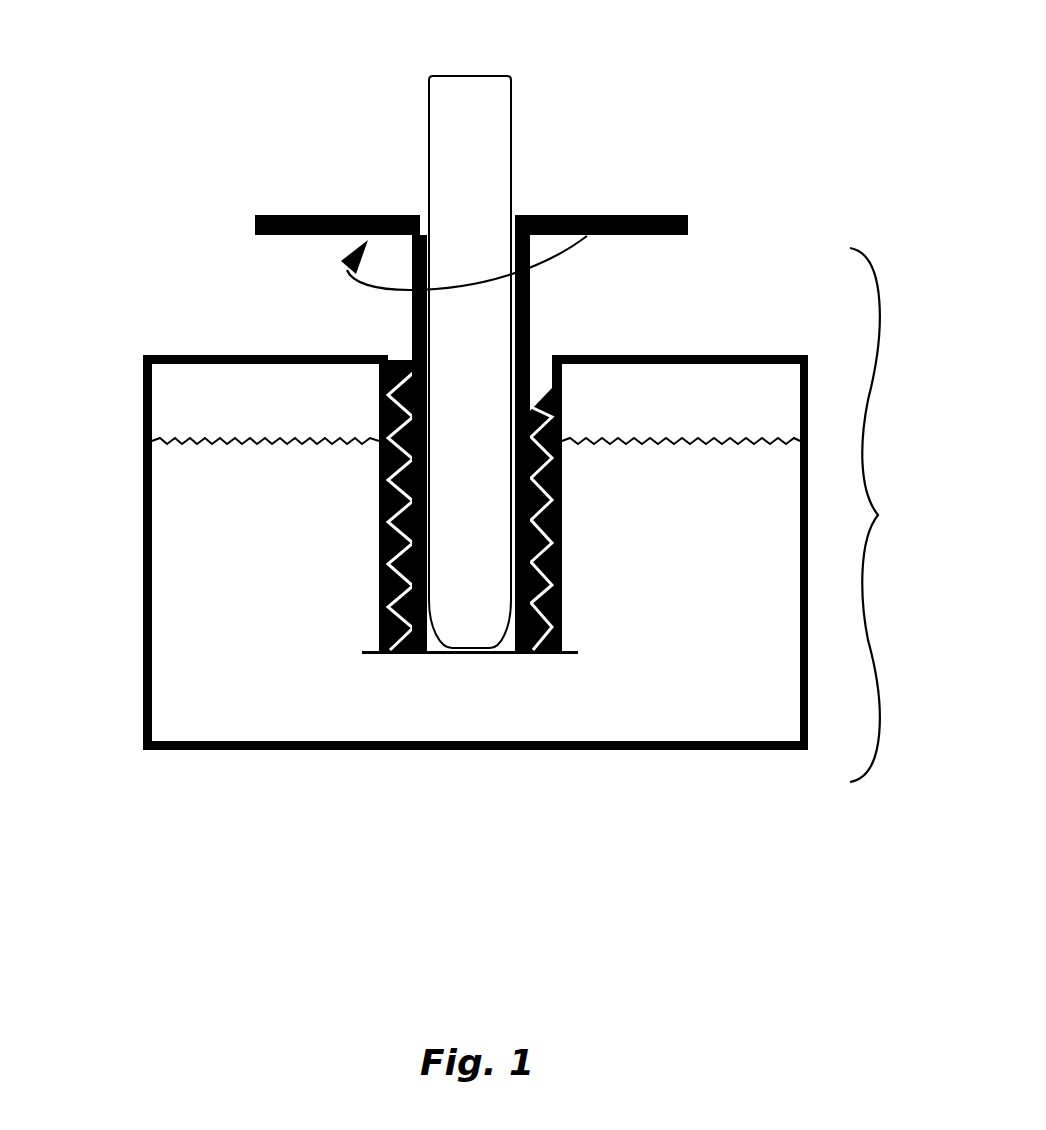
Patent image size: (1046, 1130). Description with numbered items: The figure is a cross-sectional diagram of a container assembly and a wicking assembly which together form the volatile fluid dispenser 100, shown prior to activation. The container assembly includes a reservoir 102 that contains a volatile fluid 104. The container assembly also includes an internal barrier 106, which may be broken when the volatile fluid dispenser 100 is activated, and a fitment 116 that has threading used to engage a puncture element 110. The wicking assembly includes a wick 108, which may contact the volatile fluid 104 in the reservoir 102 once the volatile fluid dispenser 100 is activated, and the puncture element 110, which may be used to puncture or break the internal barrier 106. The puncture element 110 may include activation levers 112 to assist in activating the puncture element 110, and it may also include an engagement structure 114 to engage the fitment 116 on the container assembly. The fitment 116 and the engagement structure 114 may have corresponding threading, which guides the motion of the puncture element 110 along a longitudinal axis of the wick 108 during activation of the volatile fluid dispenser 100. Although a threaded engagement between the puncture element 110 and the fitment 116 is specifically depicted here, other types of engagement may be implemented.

The volatile fluid dispenser 100 is at (889, 515).
The reservoir 102 is at (695, 422).
The volatile fluid 104 is at (698, 708).
The internal barrier 106 is at (397, 655).
The wick 108 is at (475, 143).
The puncture element 110 is at (412, 337).
The activation levers 112 is at (308, 213).
The engagement structure 114 is at (535, 633).
The fitment 116 is at (378, 532).